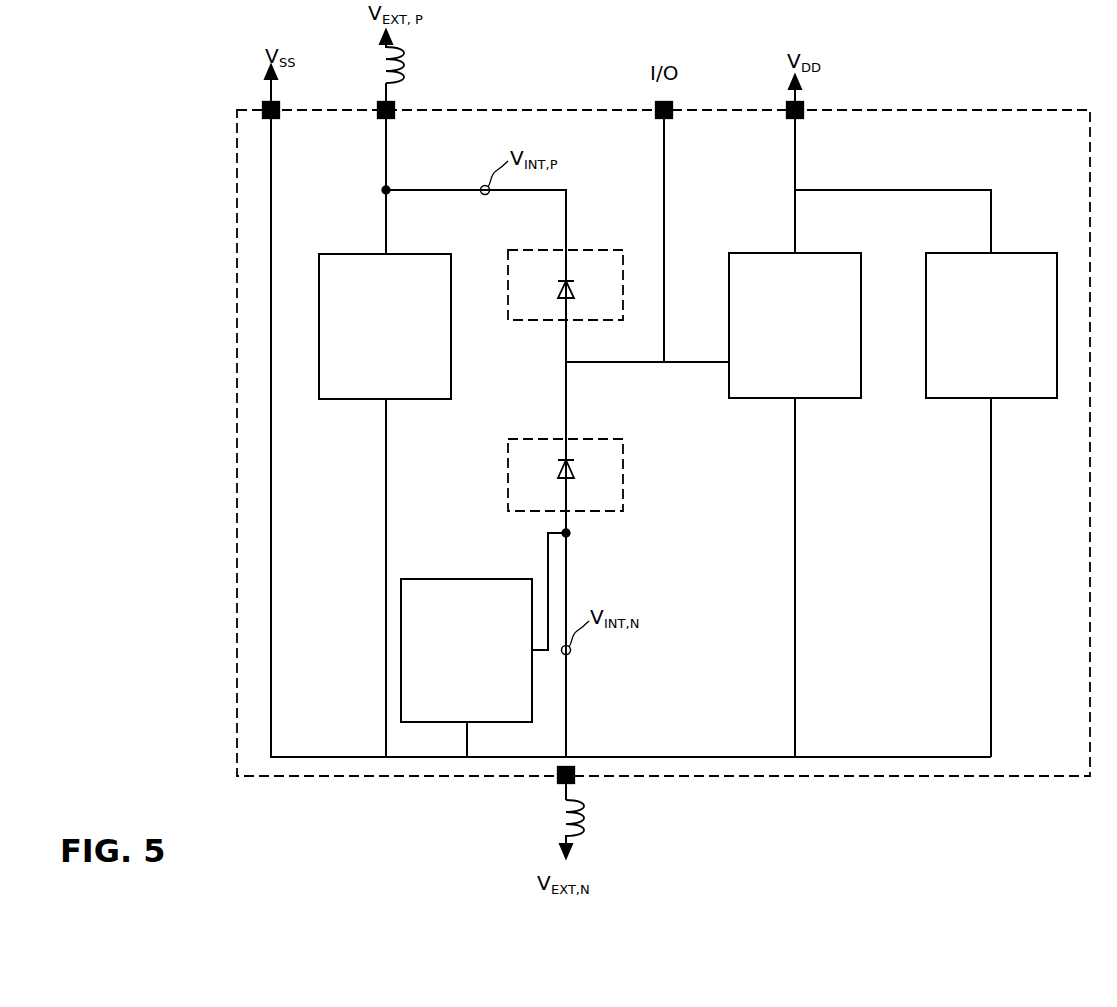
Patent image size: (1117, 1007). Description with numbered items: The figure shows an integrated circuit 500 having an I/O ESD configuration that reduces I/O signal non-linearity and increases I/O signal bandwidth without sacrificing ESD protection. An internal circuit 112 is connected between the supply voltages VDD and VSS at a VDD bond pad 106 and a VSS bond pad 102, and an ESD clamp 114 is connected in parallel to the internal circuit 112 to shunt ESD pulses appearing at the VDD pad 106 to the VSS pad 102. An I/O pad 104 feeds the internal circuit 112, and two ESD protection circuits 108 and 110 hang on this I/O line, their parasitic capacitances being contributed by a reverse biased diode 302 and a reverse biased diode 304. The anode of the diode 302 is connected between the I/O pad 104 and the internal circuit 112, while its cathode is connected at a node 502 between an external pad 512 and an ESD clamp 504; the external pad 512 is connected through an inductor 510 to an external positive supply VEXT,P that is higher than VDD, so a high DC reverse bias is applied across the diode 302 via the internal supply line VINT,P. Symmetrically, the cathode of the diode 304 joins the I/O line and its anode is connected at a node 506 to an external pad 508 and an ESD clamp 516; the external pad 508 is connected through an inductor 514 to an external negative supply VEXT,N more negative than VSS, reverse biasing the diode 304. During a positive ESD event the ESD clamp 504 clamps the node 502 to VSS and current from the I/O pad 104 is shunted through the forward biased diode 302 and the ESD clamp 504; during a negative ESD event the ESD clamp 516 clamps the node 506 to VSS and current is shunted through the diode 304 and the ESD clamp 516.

The VSS bond pad 102 is at (279, 104).
The I/O pad 104 is at (672, 105).
The VDD bond pad 106 is at (803, 105).
The ESD protection circuit 108 is at (566, 258).
The ESD protection circuit 110 is at (556, 449).
The internal circuit 112 is at (845, 253).
The ESD clamp 114 is at (1040, 253).
The diode 302 is at (545, 290).
The diode 304 is at (545, 470).
The integrated circuit 500 is at (1040, 110).
The node 502 is at (389, 187).
The ESD clamp 504 is at (340, 254).
The node 506 is at (569, 537).
The external pad 508 is at (574, 770).
The inductor 510 is at (420, 65).
The external pad 512 is at (395, 107).
The inductor 514 is at (599, 818).
The ESD clamp 516 is at (432, 579).